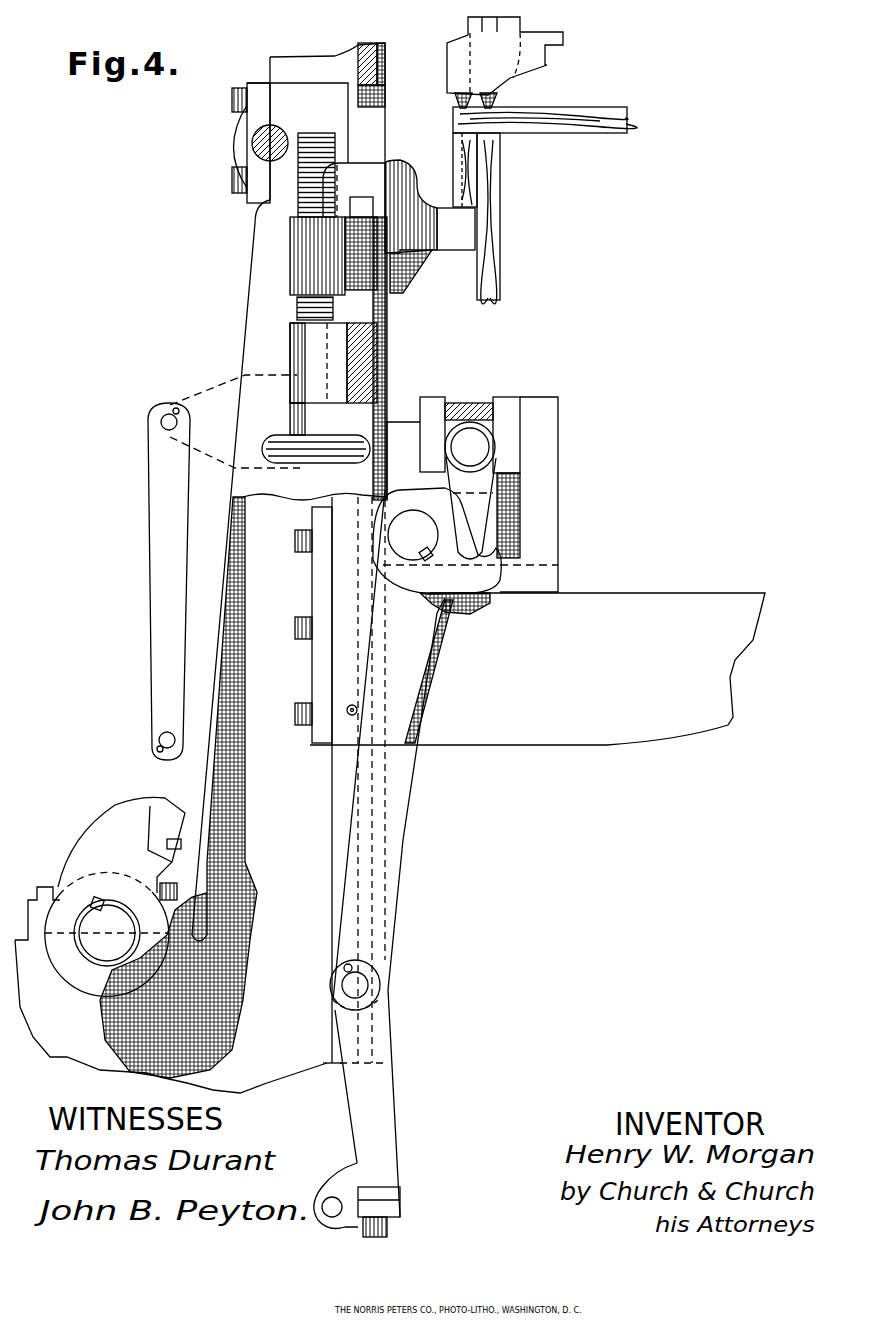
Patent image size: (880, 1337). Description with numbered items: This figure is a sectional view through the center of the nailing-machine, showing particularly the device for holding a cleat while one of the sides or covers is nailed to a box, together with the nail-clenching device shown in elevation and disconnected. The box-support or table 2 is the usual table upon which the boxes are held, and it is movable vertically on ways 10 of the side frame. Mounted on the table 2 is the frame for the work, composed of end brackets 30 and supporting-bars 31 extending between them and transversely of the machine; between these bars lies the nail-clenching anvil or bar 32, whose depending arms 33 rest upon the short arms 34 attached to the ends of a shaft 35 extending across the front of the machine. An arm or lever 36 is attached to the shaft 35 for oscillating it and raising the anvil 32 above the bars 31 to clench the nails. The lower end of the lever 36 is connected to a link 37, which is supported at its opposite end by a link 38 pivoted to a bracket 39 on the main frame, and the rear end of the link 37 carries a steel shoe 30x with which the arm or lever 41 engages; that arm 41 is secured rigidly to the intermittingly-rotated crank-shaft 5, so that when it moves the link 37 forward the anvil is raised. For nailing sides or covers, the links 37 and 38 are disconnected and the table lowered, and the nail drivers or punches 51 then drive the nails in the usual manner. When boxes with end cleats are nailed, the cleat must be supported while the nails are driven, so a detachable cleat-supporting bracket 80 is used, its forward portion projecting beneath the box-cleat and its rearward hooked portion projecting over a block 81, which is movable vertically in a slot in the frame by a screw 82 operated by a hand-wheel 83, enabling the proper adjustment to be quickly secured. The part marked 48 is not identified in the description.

The box-support or table 2 is at (390, 795).
The crank-shaft 5 is at (107, 931).
The ways 10 is at (332, 804).
The end brackets 30 is at (472, 494).
The steel shoe 30x is at (393, 1208).
The supporting-bars 31 is at (428, 408).
The nail-clenching anvil or bar 32 is at (468, 404).
The depending arms 33 is at (470, 490).
The short arms 34 is at (465, 541).
The shaft 35 is at (413, 535).
The arm or lever 36 is at (402, 790).
The link 37 is at (387, 1134).
The link 38 is at (169, 581).
The bracket 39 is at (235, 421).
The arm or lever 41 is at (121, 848).
The bracket 48 is at (537, 57).
The nail drivers or punches 51 is at (462, 104).
The cleat-supporting bracket 80 is at (404, 176).
The block 81 is at (361, 205).
The screw 82 is at (306, 137).
The hand-wheel 83 is at (272, 436).